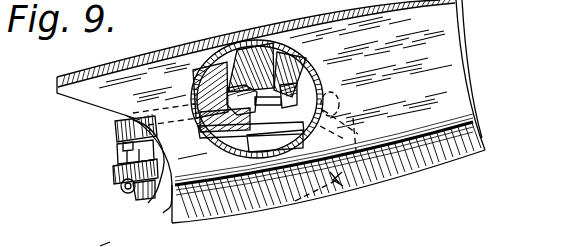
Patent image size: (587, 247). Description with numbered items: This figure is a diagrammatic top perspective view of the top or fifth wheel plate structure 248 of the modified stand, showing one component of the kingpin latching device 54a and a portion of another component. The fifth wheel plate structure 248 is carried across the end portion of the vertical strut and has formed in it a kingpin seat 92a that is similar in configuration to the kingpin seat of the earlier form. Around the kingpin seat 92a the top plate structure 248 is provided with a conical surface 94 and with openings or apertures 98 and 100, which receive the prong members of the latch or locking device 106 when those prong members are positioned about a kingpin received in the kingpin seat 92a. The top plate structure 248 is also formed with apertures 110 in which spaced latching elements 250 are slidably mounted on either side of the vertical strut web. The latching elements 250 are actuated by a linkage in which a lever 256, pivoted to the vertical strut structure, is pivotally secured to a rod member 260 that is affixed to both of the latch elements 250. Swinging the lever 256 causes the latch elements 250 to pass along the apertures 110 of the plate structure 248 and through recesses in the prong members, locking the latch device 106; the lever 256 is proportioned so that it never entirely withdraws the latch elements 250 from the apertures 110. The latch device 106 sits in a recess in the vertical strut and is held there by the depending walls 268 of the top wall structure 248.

The fifth wheel plate structure 248 is at (447, 74).
The depending walls 268 is at (462, 13).
The apertures 110 is at (212, 55).
The kingpin seat 92a is at (226, 72).
The opening or aperture 100 is at (250, 46).
The conical surface 94 is at (290, 58).
The opening or aperture 98 is at (193, 95).
The latching elements 250 is at (117, 124).
The lever 256 is at (117, 155).
The rod member 260 is at (160, 193).
The latch or locking device 106 is at (336, 186).
The kingpin latching device 54a is at (86, 238).